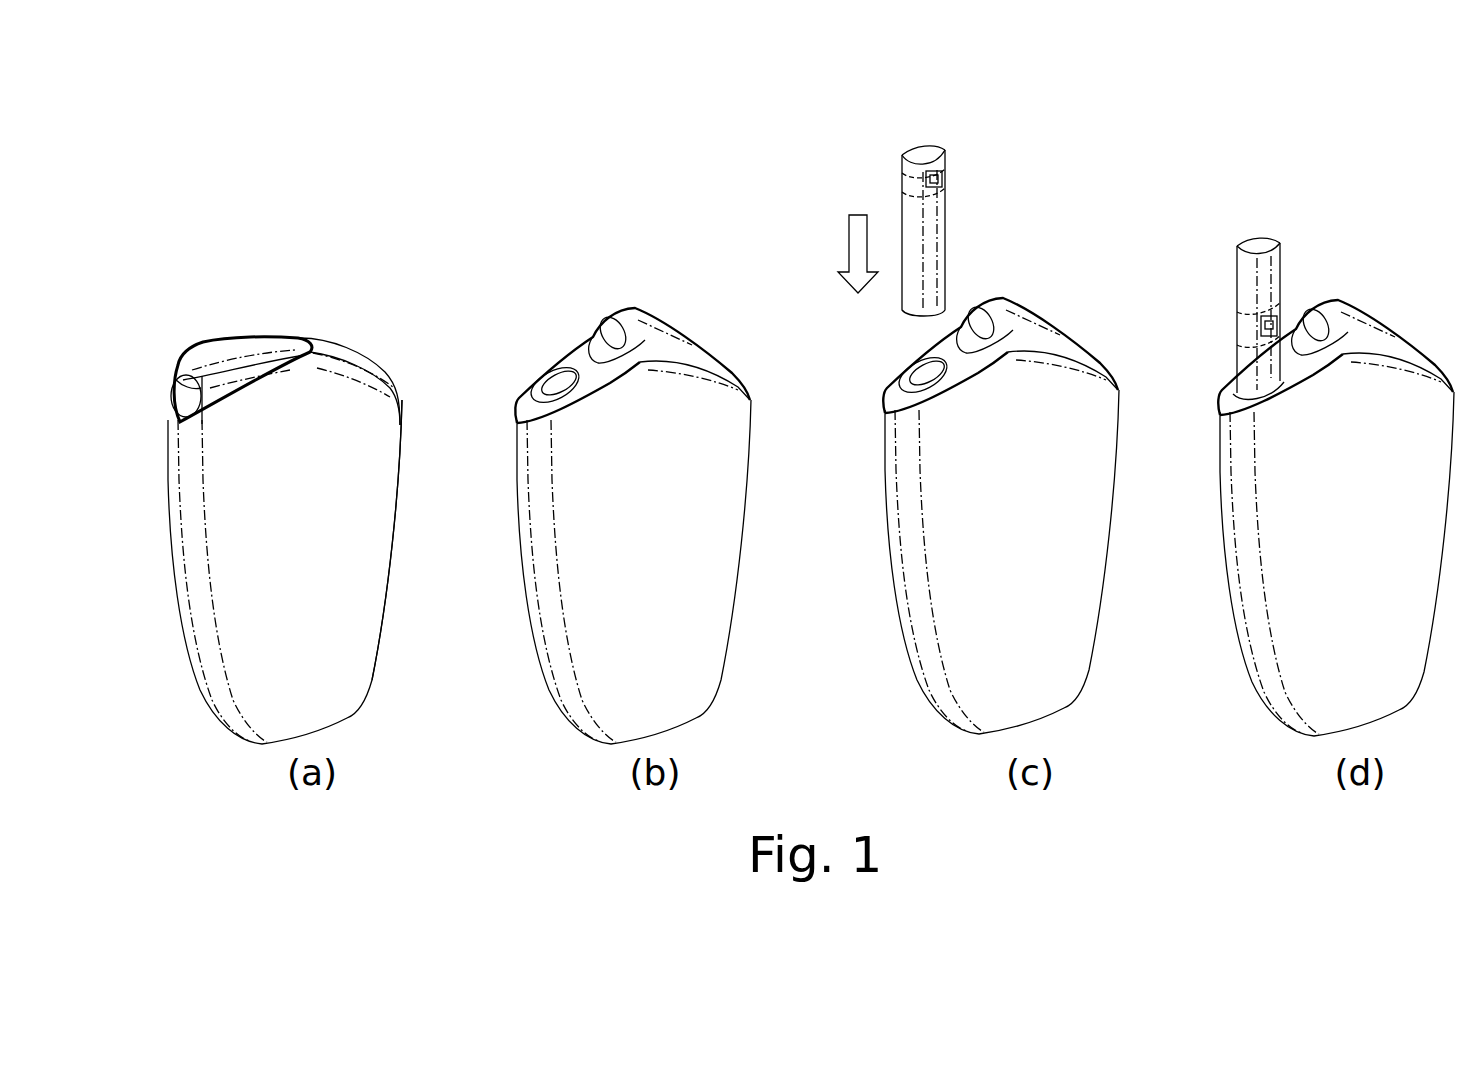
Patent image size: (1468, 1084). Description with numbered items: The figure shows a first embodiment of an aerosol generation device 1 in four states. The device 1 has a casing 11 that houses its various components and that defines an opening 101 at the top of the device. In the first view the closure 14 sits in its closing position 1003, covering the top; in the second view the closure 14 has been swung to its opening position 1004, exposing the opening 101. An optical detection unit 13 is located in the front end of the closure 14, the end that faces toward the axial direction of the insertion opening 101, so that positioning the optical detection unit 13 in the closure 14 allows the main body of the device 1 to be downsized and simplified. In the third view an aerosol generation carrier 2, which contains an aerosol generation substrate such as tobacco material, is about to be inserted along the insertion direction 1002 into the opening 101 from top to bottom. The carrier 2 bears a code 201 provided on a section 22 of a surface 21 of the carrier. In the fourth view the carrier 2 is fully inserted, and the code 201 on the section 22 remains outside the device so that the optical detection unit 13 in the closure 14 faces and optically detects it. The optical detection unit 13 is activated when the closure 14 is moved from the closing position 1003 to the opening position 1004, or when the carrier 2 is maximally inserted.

The aerosol generation device 1 is at (168, 515).
The casing 11 is at (403, 430).
The optical detection unit 13 is at (167, 393).
The closure 14 is at (260, 345).
The opening 101 is at (560, 385).
The insertion direction 1002 is at (829, 252).
The closing position 1003 is at (187, 363).
The opening position 1004 is at (632, 310).
The aerosol generation carrier 2 is at (947, 248).
The surface 21 is at (1235, 365).
The section 22 is at (902, 182).
The code 201 is at (940, 175).